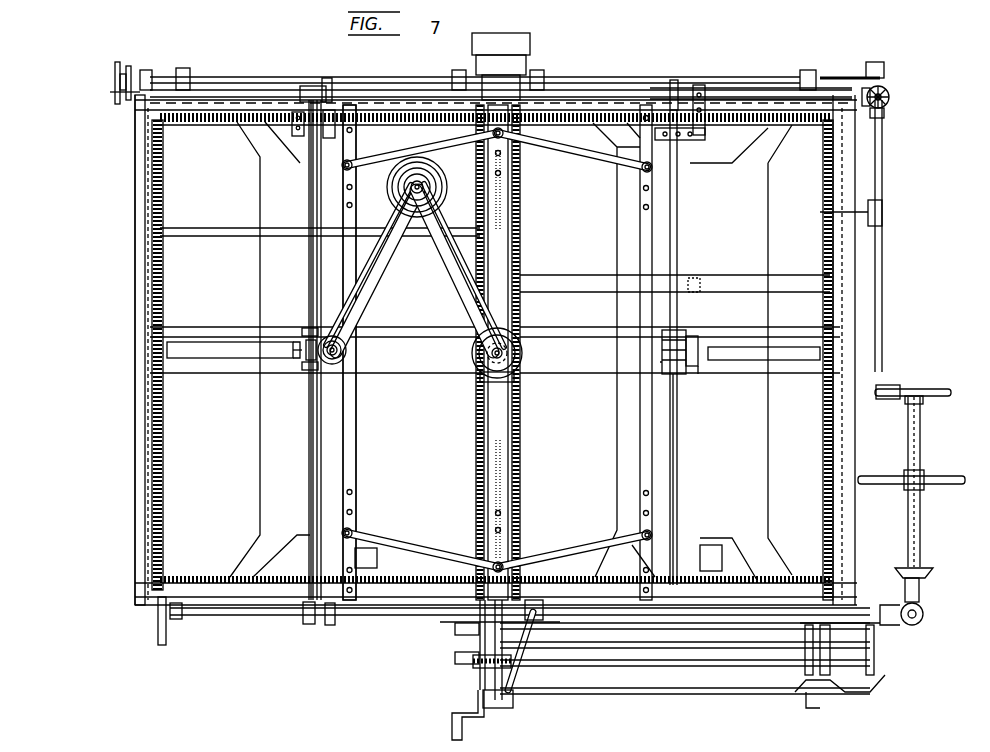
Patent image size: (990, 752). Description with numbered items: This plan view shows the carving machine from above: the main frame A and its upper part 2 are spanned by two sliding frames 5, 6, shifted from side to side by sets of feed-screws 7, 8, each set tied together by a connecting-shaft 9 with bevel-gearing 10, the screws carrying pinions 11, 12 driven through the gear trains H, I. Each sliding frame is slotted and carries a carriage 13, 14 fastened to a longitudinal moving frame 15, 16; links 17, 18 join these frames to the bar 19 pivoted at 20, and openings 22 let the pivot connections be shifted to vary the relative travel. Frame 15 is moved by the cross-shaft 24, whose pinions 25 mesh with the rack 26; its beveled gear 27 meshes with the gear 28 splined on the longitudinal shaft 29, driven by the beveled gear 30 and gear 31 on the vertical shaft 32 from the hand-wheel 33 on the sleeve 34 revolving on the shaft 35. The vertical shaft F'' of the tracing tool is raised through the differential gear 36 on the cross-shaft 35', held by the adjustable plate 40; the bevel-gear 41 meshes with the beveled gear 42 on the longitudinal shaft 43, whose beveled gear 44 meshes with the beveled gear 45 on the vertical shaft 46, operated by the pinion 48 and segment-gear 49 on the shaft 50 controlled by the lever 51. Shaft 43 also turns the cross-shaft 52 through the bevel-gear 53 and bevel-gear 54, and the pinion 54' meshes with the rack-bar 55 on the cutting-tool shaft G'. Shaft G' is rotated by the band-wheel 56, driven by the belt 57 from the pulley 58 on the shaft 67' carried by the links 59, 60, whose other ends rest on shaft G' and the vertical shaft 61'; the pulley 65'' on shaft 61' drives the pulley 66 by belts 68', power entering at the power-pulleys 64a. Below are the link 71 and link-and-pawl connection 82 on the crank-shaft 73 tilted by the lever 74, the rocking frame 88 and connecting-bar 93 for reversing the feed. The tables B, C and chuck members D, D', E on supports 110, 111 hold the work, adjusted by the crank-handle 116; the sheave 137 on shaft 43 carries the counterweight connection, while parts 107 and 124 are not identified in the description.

The upper part of main frame 2 is at (140, 514).
The main frame A is at (135, 452).
The vertical movable table B is at (768, 462).
The vertical movable table C is at (260, 485).
The revolving chuck member D is at (720, 559).
The revolving chuck member E is at (372, 557).
The train of gears I is at (455, 630).
The train of gears H is at (455, 658).
The sliding frame 5 is at (218, 326).
The sliding frame 6 is at (786, 343).
The feed-screws 7 is at (160, 452).
The feed-screws 8 is at (522, 500).
The connecting-shaft 9 is at (384, 78).
The bevel-gearing 10 is at (180, 72).
The pinion 11 is at (470, 668).
The pinion 12 is at (512, 612).
The sliding table or carriage 13 is at (304, 380).
The sliding table or carriage 14 is at (679, 374).
The longitudinal moving frame 15 is at (352, 434).
The longitudinal moving frame 16 is at (640, 443).
The link 17 is at (440, 178).
The link 18 is at (585, 160).
The bar 19 is at (503, 219).
The pivot 20 is at (522, 322).
The openings 22 is at (353, 206).
The cross-shaft 24 is at (312, 450).
The pinion 25 is at (356, 130).
The rack 26 is at (201, 124).
The beveled gear 27 is at (306, 624).
The gear 28 is at (329, 626).
The longitudinal shaft 29 is at (383, 617).
The beveled gear 30 is at (903, 624).
The gear 31 is at (924, 615).
The vertical shaft 32 is at (920, 590).
The hand-wheel 33 is at (944, 476).
The sleeve 34 is at (921, 446).
The shaft 35 is at (924, 450).
The cross-shaft 35' is at (692, 347).
The differential gear 36 is at (700, 340).
The adjustable plate 40 is at (688, 326).
The bevel-gear 41 is at (673, 80).
The beveled gear 42 is at (699, 84).
The longitudinal shaft 43 is at (735, 90).
The beveled gear 44 is at (884, 116).
The beveled gear 45 is at (889, 104).
The vertical shaft 46 is at (890, 92).
The pinion 48 is at (885, 76).
The segment-gear 49 is at (856, 74).
The shaft 50 is at (884, 158).
The lever 51 is at (822, 212).
The cross-shaft 52 is at (308, 264).
The bevel-gear 53 is at (334, 70).
The bevel-gear 54 is at (304, 94).
The pinion 54' is at (300, 332).
The rack-bar 55 is at (300, 360).
The band-wheel 56 is at (352, 348).
The belt 57 is at (372, 311).
The pulley 58 is at (445, 186).
The link 59 is at (362, 294).
The link 60 is at (458, 282).
The vertical shaft 61' is at (522, 360).
The power-pulleys 64a is at (531, 56).
The pulley 65'' is at (475, 385).
The pulley 66 is at (445, 196).
The vertical shaft 67' is at (389, 180).
The belts 68' is at (461, 265).
The link 71 is at (653, 667).
The crank-shaft 73 is at (845, 686).
The lever 74 is at (875, 653).
The link-and-pawl connection 82 is at (590, 631).
The rocking frame 88 is at (611, 695).
The connecting-bar 93 is at (628, 649).
The rod 107 is at (158, 640).
The support 110 is at (735, 273).
The support 111 is at (226, 228).
The crank-handle 116 is at (452, 714).
The collar 124 is at (924, 398).
The sheave 137 is at (118, 96).
The revolving chuck member D' is at (709, 297).
The vertical shaft F'' is at (712, 383).
The cutting-tool shaft G' is at (346, 369).